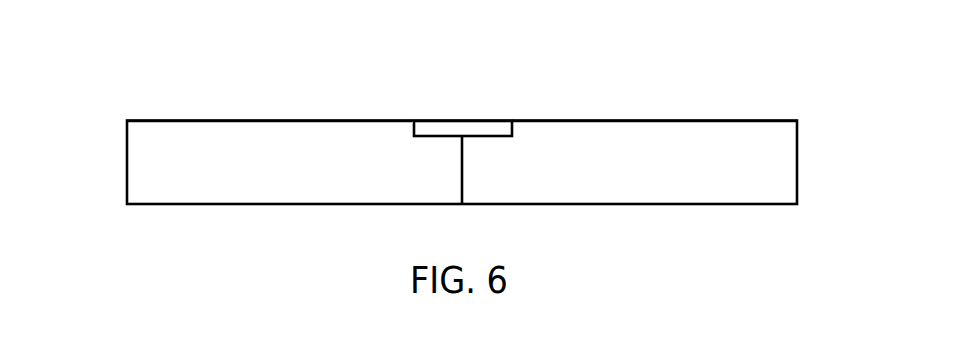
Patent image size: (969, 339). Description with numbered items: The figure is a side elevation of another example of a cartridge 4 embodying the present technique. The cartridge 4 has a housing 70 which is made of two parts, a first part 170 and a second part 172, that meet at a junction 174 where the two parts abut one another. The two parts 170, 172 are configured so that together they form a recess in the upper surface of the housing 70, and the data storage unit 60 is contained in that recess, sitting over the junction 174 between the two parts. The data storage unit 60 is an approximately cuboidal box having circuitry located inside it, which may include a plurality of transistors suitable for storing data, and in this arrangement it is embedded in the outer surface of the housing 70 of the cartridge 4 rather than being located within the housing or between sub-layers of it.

The cartridge 4 is at (755, 90).
The data storage unit 60 is at (473, 130).
The body 70 is at (126, 204).
The first portion 170 is at (238, 119).
The second portion 172 is at (565, 119).
The divider 174 is at (413, 124).